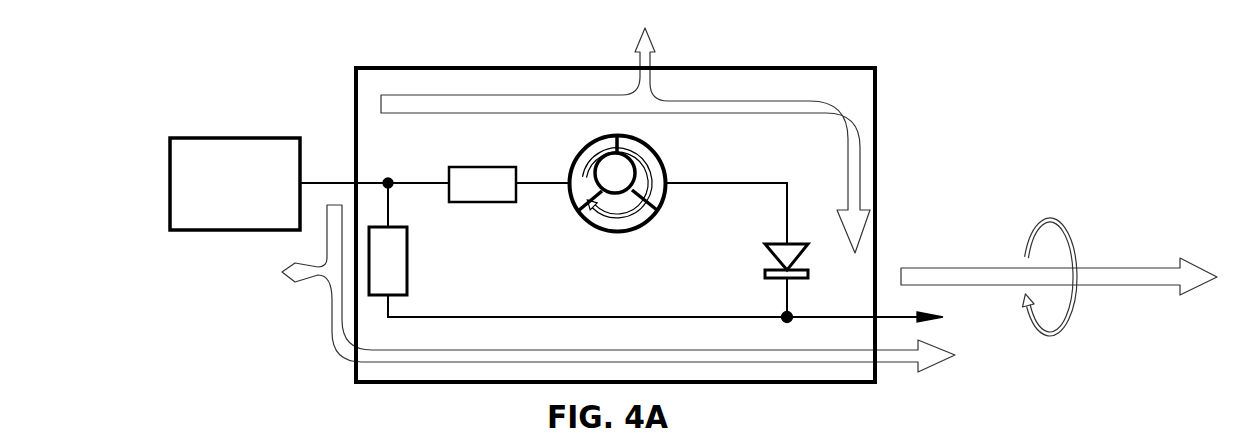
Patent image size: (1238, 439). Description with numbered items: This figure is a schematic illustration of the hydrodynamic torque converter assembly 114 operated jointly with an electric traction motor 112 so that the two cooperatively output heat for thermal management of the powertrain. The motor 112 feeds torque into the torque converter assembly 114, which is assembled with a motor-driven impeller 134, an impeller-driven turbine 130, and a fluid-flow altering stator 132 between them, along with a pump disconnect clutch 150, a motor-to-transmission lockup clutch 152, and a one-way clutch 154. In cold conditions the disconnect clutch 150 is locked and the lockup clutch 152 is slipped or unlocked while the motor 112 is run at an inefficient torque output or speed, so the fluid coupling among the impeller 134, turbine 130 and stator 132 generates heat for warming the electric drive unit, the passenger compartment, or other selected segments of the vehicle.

The electric traction motor 112 is at (183, 138).
The torque converter assembly 114 is at (400, 68).
The turbine 130 is at (648, 148).
The stator 132 is at (582, 225).
The impeller 134 is at (590, 150).
The pump disconnect clutch 150 is at (460, 167).
The lockup clutch 152 is at (408, 270).
The one-way clutch 154 is at (770, 250).